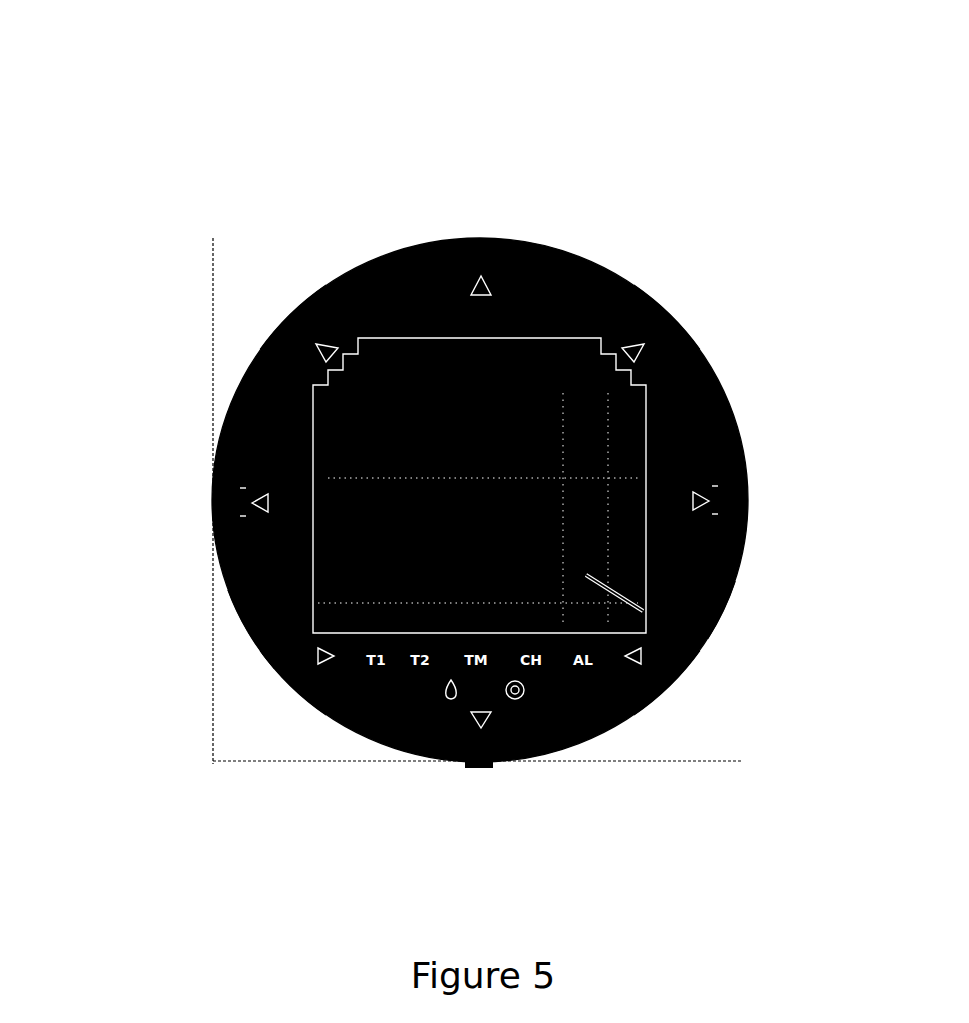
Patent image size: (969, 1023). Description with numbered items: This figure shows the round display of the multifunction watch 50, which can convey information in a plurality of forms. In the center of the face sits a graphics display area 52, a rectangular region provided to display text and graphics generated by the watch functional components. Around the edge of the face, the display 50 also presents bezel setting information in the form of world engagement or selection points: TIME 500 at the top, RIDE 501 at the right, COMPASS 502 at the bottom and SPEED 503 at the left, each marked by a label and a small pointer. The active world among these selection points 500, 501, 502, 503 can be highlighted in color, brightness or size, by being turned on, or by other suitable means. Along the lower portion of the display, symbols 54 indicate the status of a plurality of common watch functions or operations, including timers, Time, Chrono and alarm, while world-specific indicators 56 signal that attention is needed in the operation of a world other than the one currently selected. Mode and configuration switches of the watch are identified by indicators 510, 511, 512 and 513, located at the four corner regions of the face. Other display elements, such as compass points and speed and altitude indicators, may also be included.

The multifunction watch display 50 is at (130, 113).
The graphics display area 52 is at (712, 613).
The symbols 54 is at (233, 648).
The world-specific indicators 56 is at (233, 682).
The TIME world selection point 500 is at (477, 230).
The RIDE world selection point 501 is at (740, 487).
The COMPASS world selection point 502 is at (484, 763).
The SPEED world selection point 503 is at (200, 488).
The mode and configuration switch indicator 510 is at (683, 290).
The mode and configuration switch indicator 511 is at (665, 692).
The mode and configuration switch indicator 512 is at (268, 698).
The mode and configuration switch indicator 513 is at (253, 305).